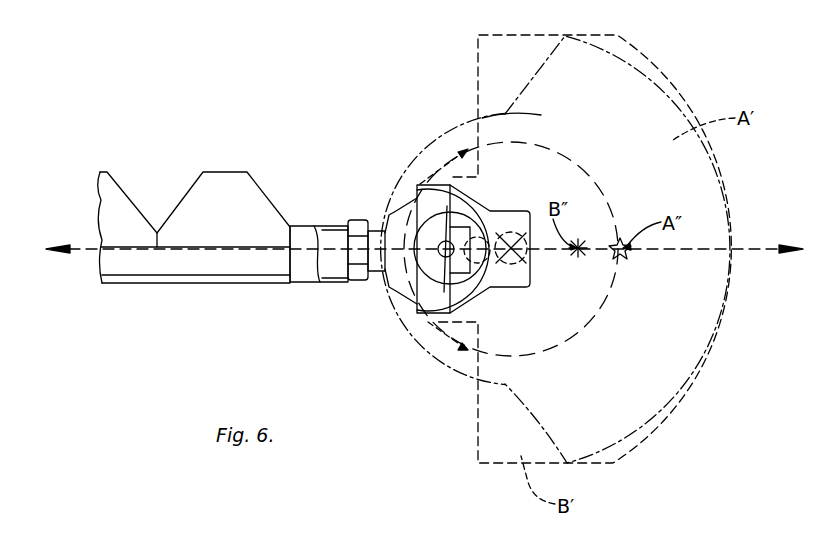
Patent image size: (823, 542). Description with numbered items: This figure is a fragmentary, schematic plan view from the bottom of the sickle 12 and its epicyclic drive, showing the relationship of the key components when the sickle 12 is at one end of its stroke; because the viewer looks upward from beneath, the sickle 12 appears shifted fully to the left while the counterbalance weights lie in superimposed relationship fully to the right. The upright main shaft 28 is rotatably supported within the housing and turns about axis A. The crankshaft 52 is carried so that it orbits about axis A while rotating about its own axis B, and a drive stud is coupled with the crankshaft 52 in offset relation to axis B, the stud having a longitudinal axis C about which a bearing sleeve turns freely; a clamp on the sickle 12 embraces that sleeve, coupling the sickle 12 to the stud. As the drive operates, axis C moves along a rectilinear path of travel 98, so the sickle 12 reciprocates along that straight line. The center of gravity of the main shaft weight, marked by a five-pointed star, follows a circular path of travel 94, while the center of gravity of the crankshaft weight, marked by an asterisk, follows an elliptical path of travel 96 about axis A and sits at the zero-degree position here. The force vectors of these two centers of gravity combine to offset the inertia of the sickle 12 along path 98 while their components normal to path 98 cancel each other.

The rectilinear path of travel 98 is at (84, 246).
The sickle 12 is at (189, 268).
The crankshaft 52 is at (480, 236).
The main shaft 28 is at (518, 231).
The circular path of travel 94 is at (605, 312).
The elliptical path of travel 96 is at (537, 377).
The axis A is at (518, 264).
The axis B is at (470, 276).
The longitudinal axis C is at (443, 256).